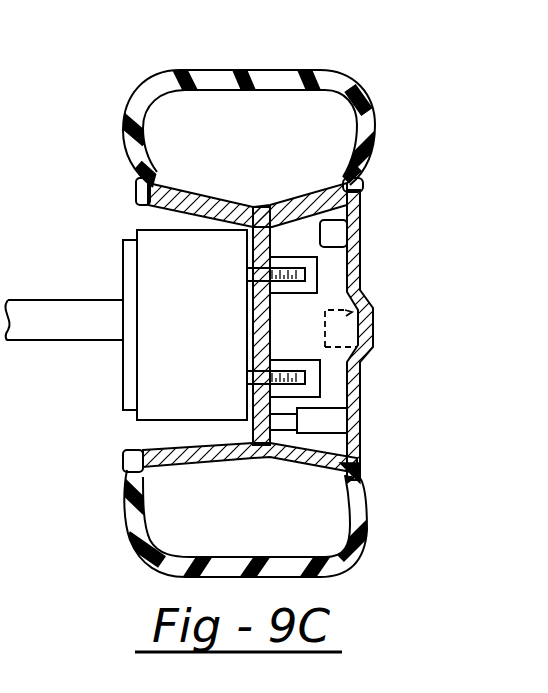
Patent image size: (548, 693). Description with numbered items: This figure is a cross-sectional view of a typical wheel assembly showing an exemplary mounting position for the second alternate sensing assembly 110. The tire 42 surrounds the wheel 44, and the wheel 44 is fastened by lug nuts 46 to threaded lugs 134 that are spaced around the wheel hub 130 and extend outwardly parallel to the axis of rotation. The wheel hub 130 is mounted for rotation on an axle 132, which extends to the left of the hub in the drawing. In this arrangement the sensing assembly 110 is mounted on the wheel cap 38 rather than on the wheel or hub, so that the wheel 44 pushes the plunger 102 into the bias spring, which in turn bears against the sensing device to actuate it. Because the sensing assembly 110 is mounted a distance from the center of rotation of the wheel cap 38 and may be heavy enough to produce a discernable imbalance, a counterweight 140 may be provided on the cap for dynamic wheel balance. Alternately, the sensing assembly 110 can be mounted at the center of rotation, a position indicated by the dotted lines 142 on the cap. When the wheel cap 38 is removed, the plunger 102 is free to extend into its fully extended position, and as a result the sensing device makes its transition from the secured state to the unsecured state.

The wheel cap 38 is at (360, 439).
The tire 42 is at (177, 560).
The wheel 44 is at (167, 440).
The lug nuts 46 is at (320, 268).
The plunger 102 is at (283, 421).
The second alternate sensing assembly 110 is at (323, 417).
The wheel hub 130 is at (177, 375).
The axle 132 is at (80, 318).
The threaded lugs 134 is at (256, 208).
The counterweight 140 is at (330, 221).
The dotted lines 142 is at (373, 300).